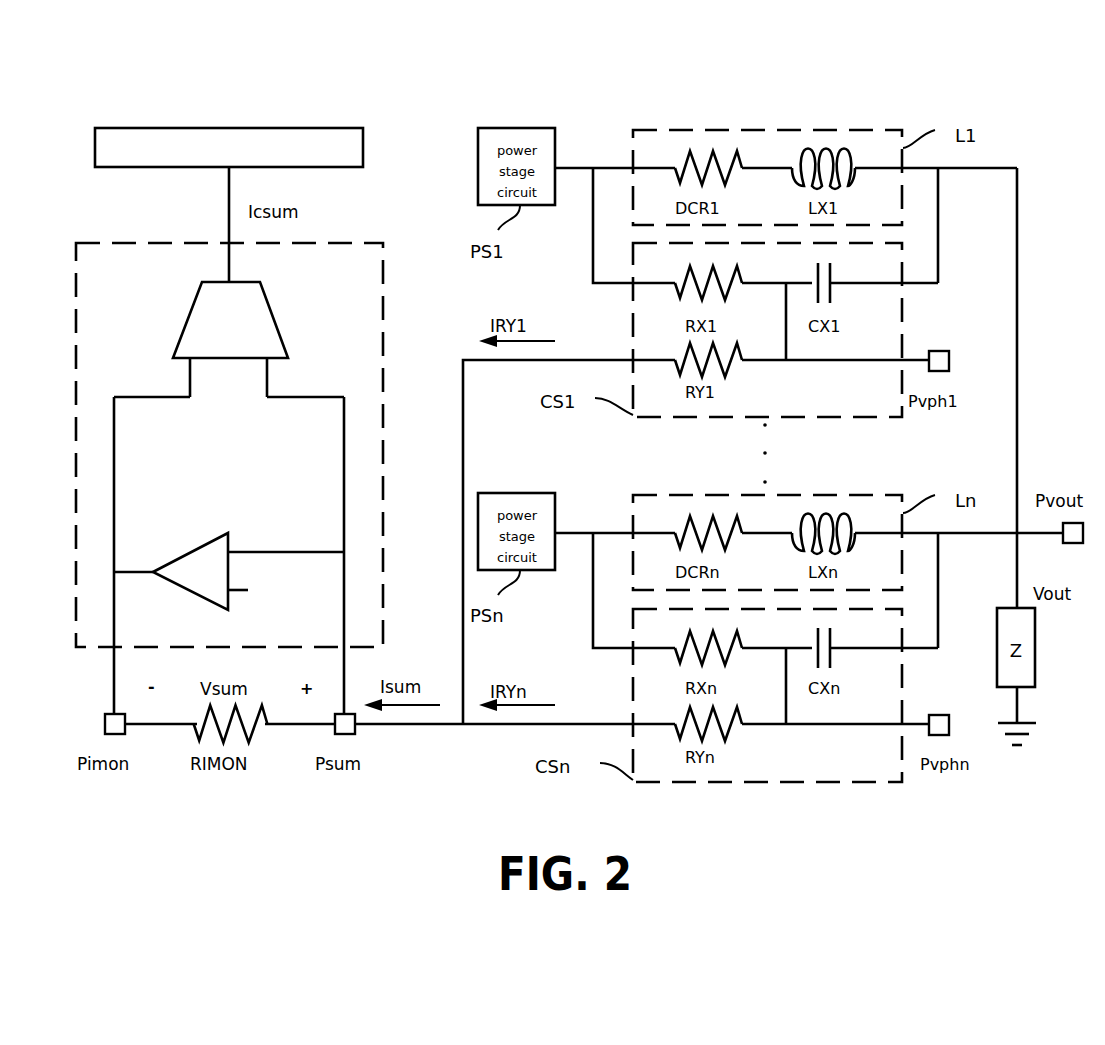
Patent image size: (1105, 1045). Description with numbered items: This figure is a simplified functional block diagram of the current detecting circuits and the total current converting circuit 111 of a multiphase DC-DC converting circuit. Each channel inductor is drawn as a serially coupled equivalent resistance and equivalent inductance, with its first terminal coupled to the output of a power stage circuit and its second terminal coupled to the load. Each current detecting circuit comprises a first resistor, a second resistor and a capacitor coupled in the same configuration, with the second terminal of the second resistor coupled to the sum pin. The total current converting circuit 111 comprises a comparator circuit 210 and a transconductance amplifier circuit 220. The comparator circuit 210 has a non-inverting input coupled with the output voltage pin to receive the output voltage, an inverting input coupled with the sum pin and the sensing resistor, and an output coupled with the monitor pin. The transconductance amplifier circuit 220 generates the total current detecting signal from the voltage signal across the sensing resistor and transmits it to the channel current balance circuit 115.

The total current converting circuit 111 is at (118, 243).
The channel current balance circuit 115 is at (365, 148).
The comparator circuit 210 is at (228, 535).
The transconductance amplifier circuit 220 is at (190, 318).